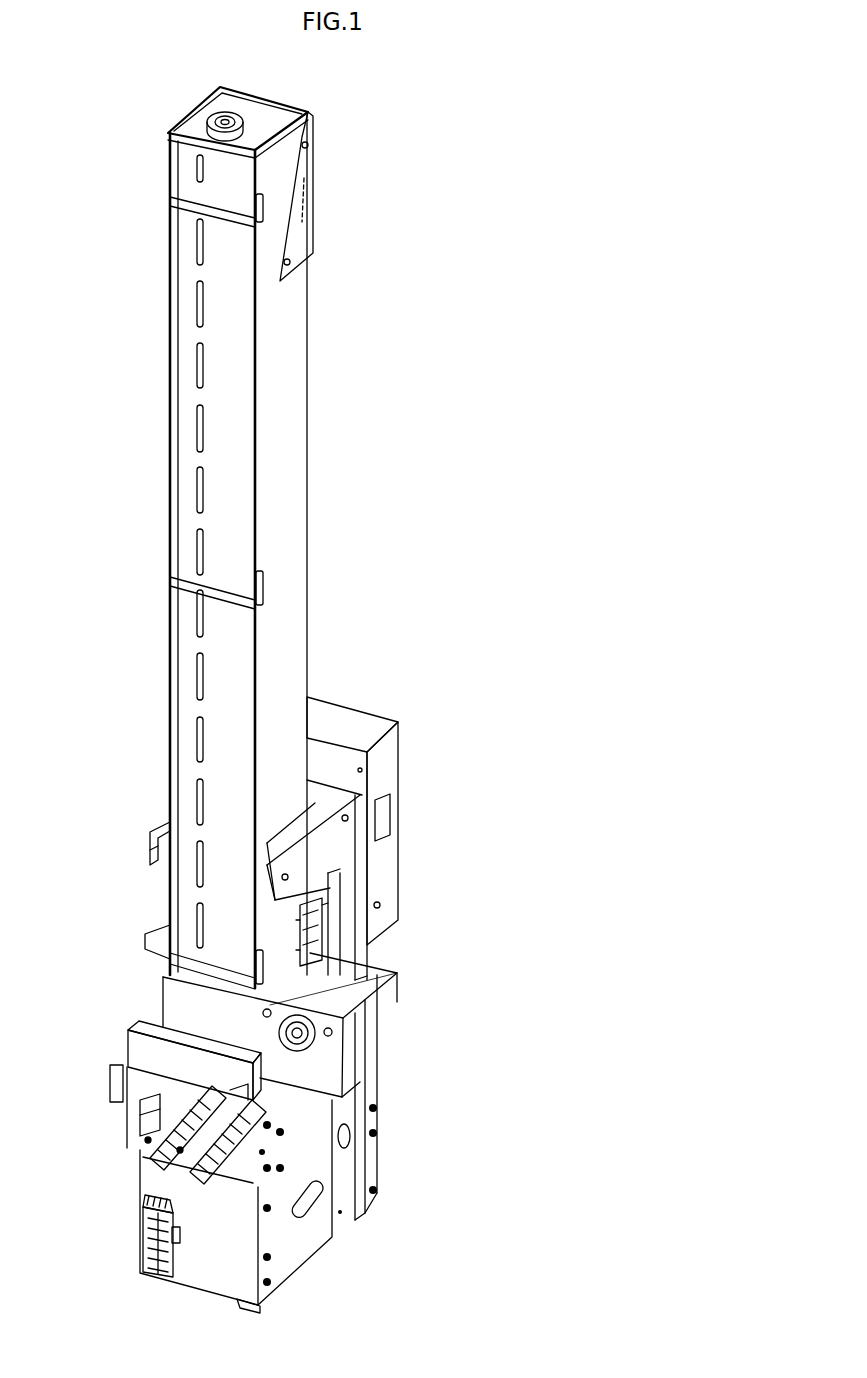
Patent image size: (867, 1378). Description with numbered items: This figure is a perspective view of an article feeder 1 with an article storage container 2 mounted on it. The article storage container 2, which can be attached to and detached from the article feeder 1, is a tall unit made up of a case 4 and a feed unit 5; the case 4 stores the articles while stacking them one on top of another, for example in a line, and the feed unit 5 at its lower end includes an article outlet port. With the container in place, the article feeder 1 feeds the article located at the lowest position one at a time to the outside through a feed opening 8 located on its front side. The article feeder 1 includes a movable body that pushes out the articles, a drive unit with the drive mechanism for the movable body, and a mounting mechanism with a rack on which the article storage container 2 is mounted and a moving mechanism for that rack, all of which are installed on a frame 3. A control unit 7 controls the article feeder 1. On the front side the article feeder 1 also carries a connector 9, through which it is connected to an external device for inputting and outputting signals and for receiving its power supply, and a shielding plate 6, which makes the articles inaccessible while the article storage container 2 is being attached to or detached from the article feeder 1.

The article feeder 1 is at (429, 1078).
The article storage container 2 is at (400, 518).
The frame 3 is at (342, 1168).
The case 4 is at (170, 480).
The feed unit 5 is at (360, 1012).
The shielding plate 6 is at (163, 1048).
The control unit 7 is at (378, 752).
The feed opening 8 is at (130, 1157).
The connector 9 is at (140, 1252).